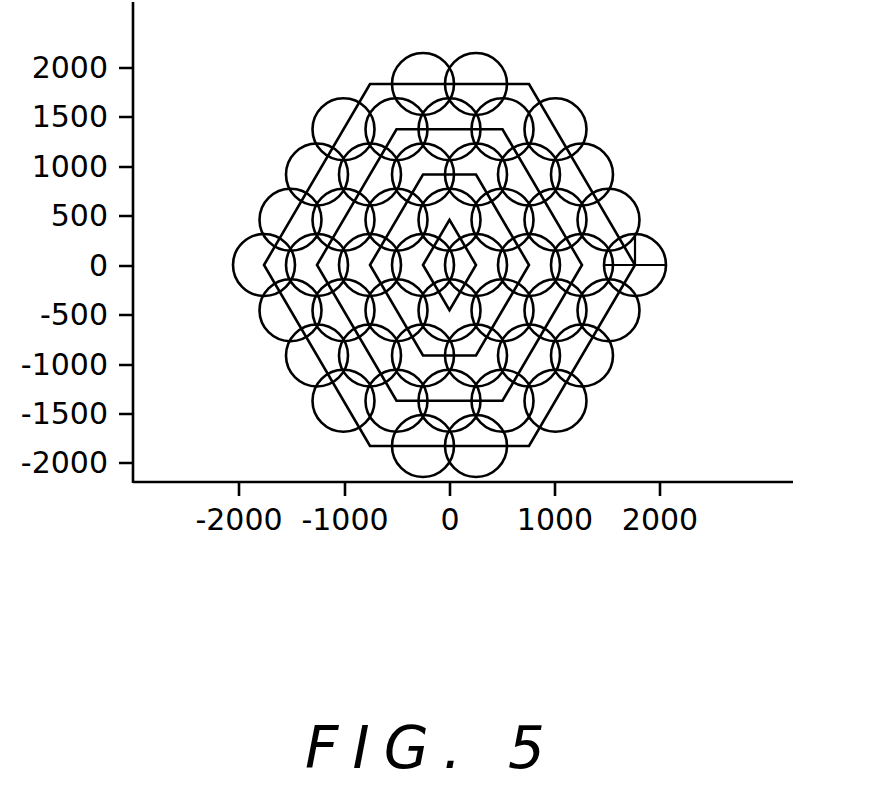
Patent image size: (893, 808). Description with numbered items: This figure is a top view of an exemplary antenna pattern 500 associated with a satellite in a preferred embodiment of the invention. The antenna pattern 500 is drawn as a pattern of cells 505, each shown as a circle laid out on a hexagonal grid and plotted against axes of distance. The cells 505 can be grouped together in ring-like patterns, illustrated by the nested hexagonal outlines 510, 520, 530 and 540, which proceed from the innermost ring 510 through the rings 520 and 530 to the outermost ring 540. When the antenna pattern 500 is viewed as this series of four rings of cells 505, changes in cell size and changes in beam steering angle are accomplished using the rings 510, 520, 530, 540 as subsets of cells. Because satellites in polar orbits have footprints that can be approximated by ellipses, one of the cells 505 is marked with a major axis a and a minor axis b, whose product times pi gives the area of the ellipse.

The antenna pattern 500 is at (469, 359).
The cells 505 is at (650, 286).
The ring-like pattern of cells 510 is at (421, 272).
The ring-like pattern of cells 520 is at (410, 272).
The ring-like pattern of cells 530 is at (367, 93).
The ring-like pattern of cells 540 is at (529, 86).
The major axis a is at (636, 238).
The minor axis b is at (657, 262).